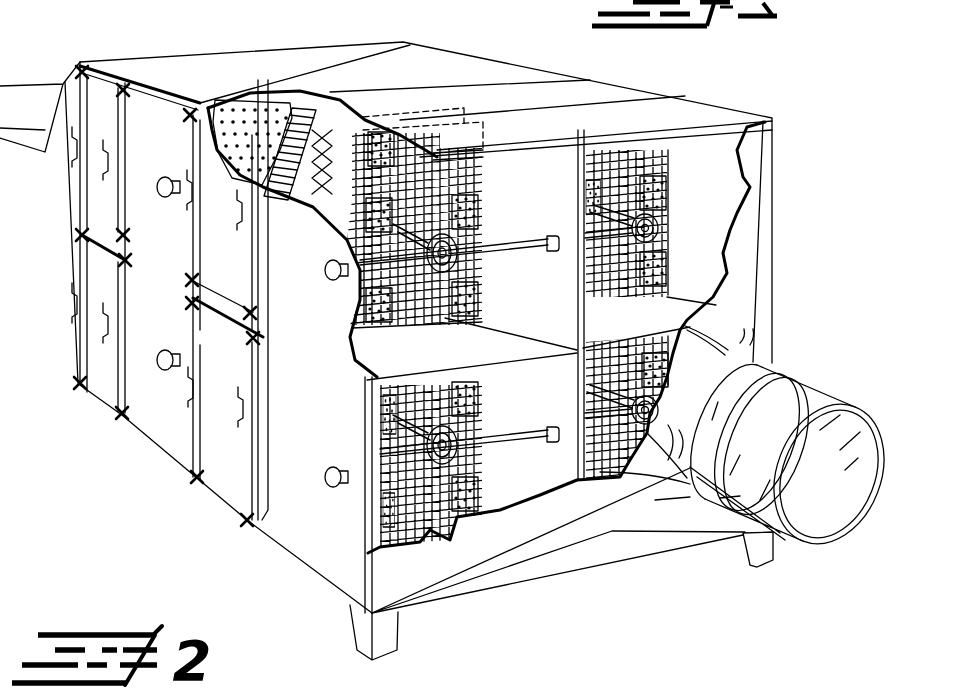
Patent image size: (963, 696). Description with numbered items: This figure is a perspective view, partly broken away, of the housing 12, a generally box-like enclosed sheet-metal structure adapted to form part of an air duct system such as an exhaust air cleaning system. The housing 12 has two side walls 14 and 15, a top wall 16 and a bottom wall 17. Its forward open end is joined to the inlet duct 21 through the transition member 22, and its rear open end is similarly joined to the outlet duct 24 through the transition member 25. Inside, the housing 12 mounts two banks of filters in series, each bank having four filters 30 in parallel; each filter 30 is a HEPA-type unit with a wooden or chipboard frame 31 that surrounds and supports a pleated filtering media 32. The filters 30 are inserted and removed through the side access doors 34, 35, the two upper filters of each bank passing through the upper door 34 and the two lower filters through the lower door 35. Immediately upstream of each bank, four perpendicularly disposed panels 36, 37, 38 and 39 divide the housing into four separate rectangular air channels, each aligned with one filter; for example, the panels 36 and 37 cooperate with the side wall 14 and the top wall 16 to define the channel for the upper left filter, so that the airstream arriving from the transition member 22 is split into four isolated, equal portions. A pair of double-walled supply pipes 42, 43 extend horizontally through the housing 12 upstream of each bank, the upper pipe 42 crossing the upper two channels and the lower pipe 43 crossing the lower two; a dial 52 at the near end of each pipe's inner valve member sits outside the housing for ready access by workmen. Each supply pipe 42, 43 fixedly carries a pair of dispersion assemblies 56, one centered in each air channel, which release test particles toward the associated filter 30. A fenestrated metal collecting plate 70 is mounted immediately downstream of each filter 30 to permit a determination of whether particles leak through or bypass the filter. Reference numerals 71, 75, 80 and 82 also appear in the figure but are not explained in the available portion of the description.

The housing 12 is at (718, 95).
The side wall 14 is at (295, 397).
The side wall 15 is at (736, 174).
The top wall 16 is at (583, 133).
The bottom wall 17 is at (398, 535).
The inlet duct 21 is at (807, 400).
The transition member 22 is at (746, 283).
The outlet duct 24 is at (28, 98).
The transition member 25 is at (58, 173).
The filter 30 is at (339, 104).
The frame 31 is at (313, 100).
The pleated filtering media 32 is at (364, 110).
The upper door 34 is at (82, 123).
The lower door 35 is at (113, 291).
The panel 36 is at (528, 191).
The panel 37 is at (458, 356).
The panel 38 is at (534, 411).
The panel 39 is at (547, 329).
The upper supply pipe 42 is at (510, 255).
The lower supply pipe 43 is at (510, 445).
The dial 52 is at (165, 360).
The dispersion assembly 56 is at (474, 240).
The plate 70 is at (257, 103).
The corrugated layer 71 is at (250, 122).
The hanger clamp strip 75 is at (248, 180).
The frame bracket 80 is at (462, 165).
The filter pad 82 is at (443, 317).